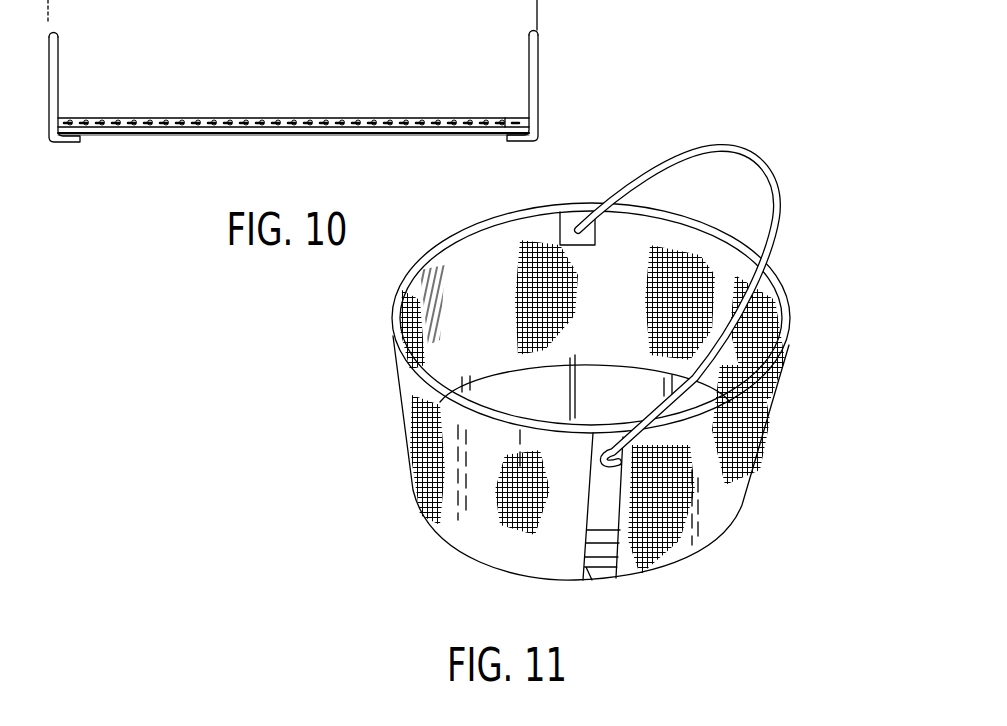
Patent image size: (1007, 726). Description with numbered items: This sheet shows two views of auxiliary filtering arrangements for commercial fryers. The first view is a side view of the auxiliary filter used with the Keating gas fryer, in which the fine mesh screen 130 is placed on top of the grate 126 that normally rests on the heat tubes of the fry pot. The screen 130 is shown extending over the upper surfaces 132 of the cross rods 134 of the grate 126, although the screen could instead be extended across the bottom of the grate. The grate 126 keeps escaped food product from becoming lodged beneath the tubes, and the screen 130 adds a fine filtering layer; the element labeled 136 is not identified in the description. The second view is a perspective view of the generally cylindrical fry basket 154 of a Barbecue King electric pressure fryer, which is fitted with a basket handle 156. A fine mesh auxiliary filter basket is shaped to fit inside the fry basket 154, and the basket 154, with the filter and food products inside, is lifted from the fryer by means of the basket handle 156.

In FIG. 10, the grate 126 is at (363, 133).
In FIG. 10, the fine mesh screen 130 is at (245, 118).
In FIG. 10, the upper surfaces 132 is at (338, 118).
In FIG. 10, the cross rods 134 is at (514, 118).
In FIG. 10, the bottom plate 136 is at (187, 133).
In FIG. 11, the fry basket 154 is at (790, 358).
In FIG. 11, the basket handle 156 is at (645, 172).